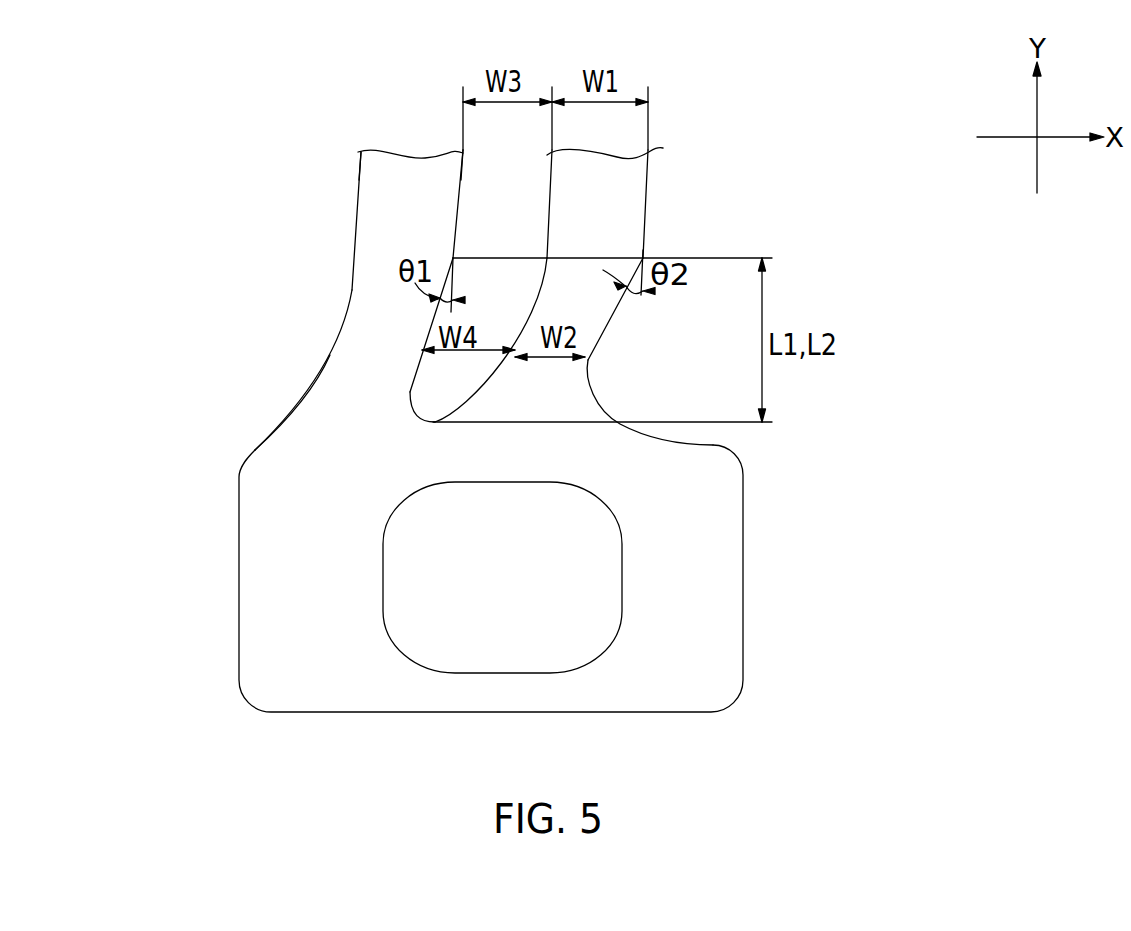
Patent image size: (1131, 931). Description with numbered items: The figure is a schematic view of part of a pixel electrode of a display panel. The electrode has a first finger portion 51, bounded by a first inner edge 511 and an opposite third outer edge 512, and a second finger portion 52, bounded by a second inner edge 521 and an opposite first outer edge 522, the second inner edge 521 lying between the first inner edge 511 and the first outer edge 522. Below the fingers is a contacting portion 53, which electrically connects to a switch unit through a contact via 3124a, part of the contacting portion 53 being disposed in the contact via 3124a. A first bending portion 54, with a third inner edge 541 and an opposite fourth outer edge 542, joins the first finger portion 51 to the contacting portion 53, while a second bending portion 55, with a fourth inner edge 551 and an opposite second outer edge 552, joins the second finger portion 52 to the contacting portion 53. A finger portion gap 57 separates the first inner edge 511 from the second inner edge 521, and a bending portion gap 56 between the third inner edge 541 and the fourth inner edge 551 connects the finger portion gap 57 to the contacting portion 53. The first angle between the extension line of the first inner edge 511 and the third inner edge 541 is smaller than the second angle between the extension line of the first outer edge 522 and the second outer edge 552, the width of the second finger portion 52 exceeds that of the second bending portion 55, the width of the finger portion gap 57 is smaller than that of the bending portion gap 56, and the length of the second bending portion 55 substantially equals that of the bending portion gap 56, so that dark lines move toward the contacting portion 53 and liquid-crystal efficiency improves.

The first finger portion 51 is at (392, 278).
The first inner edge 511 is at (457, 185).
The third outer edge 512 is at (357, 183).
The second finger portion 52 is at (578, 278).
The second inner edge 521 is at (553, 203).
The first outer edge 522 is at (648, 180).
The contacting portion 53 is at (268, 572).
The first bending portion 54 is at (345, 330).
The third inner edge 541 is at (435, 318).
The fourth outer edge 542 is at (330, 355).
The second bending portion 55 is at (595, 305).
The fourth inner edge 551 is at (543, 283).
The second outer edge 552 is at (600, 320).
The bending portion gap 56 is at (448, 390).
The finger portion gap 57 is at (470, 207).
The contact via 3124a is at (583, 583).